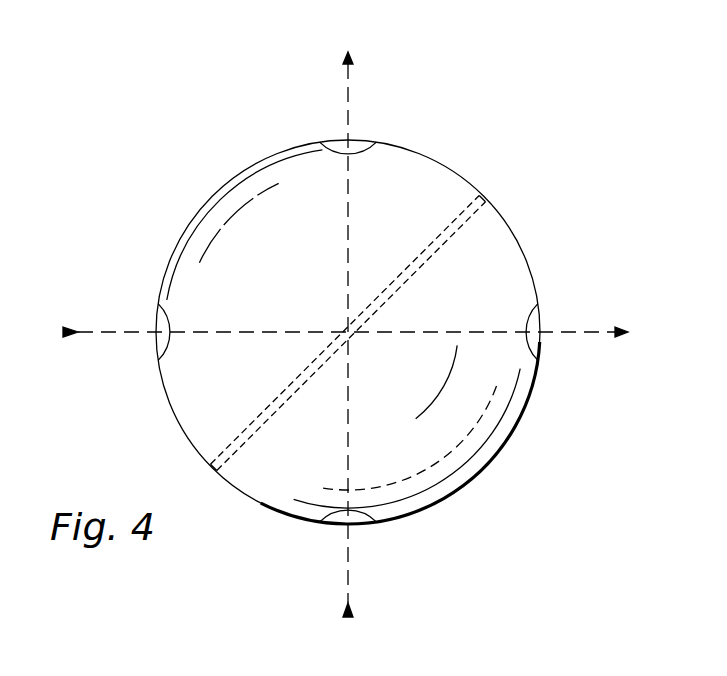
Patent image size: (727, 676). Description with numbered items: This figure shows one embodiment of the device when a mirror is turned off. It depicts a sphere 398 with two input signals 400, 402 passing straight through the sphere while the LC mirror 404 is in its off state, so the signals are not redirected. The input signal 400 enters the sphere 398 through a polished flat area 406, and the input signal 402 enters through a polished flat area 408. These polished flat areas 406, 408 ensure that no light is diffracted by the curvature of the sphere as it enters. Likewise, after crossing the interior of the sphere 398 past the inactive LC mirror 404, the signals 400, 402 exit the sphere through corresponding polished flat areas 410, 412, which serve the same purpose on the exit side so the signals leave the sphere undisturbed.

The sphere 398 is at (490, 462).
The input signal 400 is at (93, 331).
The input signal 402 is at (343, 587).
The LC mirror 404 is at (422, 248).
The polished flat area 406 is at (160, 348).
The polished flat area 408 is at (362, 520).
The polished flat area 410 is at (333, 147).
The polished flat area 412 is at (535, 316).